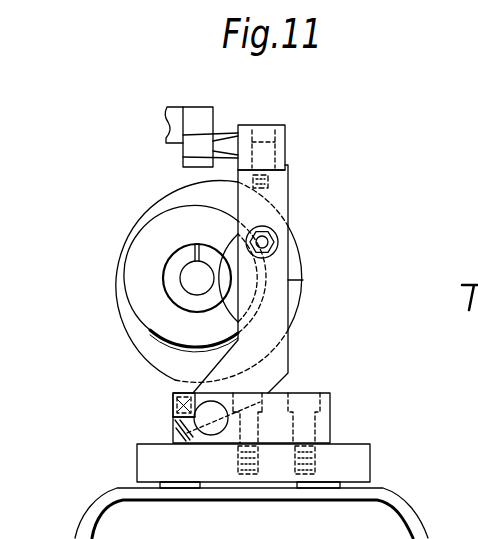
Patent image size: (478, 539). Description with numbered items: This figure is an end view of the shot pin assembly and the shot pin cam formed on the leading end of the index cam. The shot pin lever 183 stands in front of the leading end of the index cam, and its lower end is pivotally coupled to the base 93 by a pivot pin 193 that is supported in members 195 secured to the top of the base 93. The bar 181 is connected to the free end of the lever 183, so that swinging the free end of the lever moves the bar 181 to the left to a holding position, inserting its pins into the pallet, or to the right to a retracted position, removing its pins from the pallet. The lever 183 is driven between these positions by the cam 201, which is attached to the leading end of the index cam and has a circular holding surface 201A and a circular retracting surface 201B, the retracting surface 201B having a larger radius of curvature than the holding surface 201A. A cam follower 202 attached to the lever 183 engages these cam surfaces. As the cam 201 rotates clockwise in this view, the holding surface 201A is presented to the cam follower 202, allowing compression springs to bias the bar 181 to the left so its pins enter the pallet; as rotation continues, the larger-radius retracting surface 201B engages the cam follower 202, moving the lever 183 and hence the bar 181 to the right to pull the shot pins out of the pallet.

The base 93 is at (358, 468).
The bar 181 is at (260, 128).
The lever 183 is at (278, 360).
The pivot pin 193 is at (211, 435).
The members 195 is at (323, 412).
The cam 201 is at (152, 278).
The circular holding surface 201A is at (177, 220).
The circular retracting surface 201B is at (197, 353).
The cam follower 202 is at (283, 240).